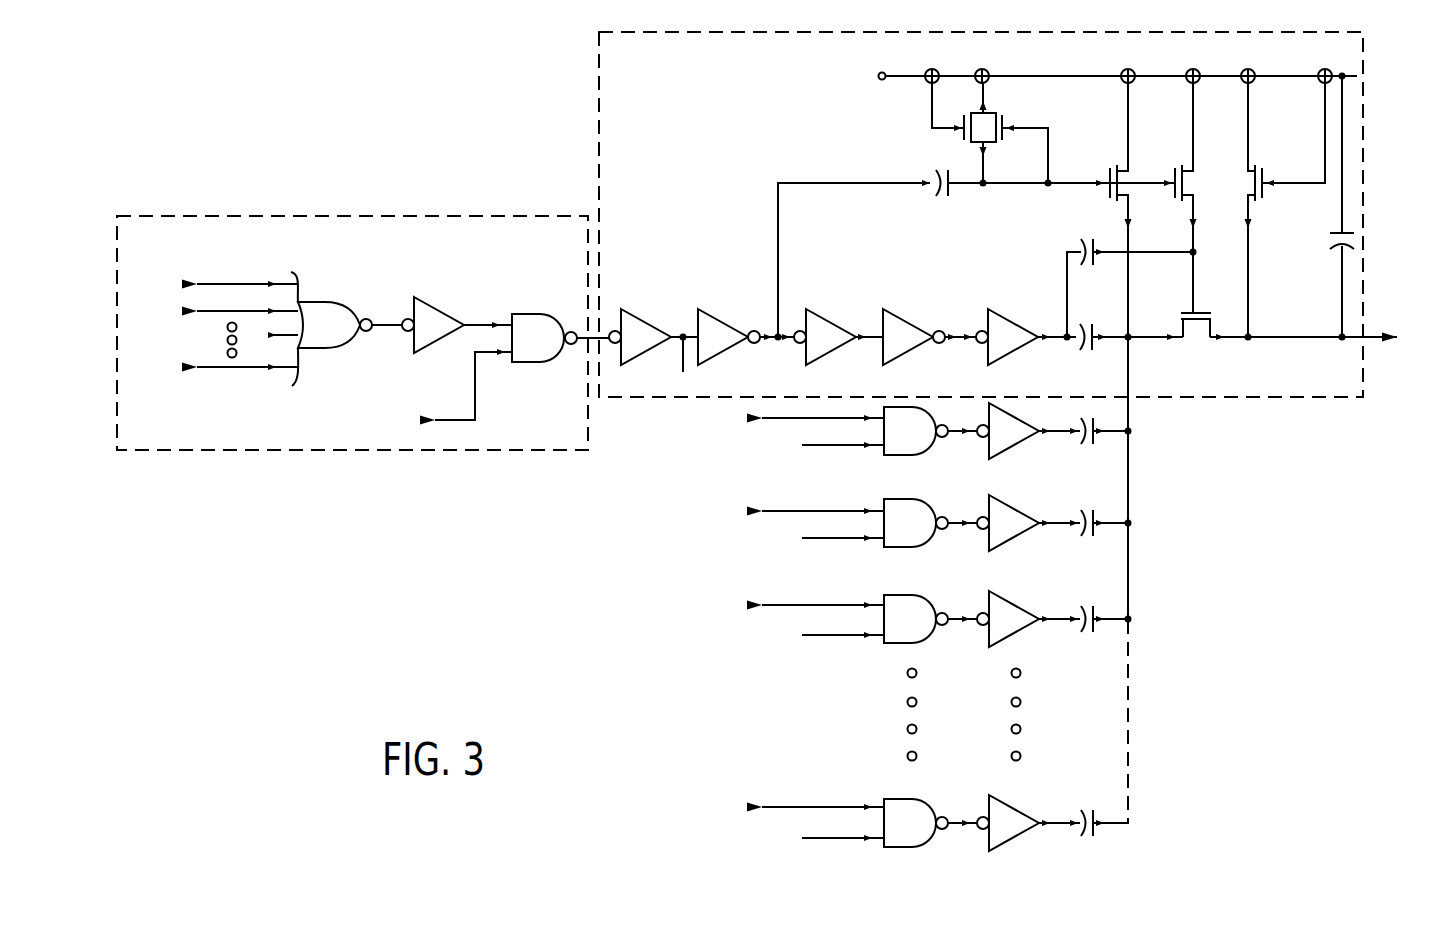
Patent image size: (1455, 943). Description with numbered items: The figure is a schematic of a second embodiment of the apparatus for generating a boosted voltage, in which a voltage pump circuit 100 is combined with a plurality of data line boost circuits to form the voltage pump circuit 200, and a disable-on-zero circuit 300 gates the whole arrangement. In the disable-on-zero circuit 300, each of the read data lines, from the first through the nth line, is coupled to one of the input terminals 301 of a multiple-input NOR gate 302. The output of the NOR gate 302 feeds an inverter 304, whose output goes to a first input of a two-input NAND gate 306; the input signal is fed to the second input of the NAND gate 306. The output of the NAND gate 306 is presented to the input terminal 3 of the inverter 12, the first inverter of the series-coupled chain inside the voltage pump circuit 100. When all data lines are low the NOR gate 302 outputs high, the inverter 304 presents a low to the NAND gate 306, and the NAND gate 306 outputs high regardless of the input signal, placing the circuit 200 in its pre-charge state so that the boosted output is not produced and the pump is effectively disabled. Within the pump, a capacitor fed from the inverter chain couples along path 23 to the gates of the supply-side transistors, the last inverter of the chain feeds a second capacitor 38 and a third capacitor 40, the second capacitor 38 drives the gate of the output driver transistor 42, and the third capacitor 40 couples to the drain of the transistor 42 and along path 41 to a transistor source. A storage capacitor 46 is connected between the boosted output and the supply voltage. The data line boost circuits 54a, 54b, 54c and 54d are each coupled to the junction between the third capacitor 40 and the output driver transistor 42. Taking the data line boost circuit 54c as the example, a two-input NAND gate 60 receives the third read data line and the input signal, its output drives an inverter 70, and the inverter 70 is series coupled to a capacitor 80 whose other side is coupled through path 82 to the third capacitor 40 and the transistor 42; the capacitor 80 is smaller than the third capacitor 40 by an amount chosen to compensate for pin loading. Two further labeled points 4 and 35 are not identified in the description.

The voltage pump circuit 100 is at (599, 104).
The voltage pump circuit 200 is at (538, 558).
The disable-on-zero circuit 300 is at (292, 216).
The input terminals 301 is at (228, 313).
The multiple-input NOR gate 302 is at (332, 348).
The inverter 304 is at (416, 299).
The two-input NAND gate 306 is at (531, 314).
The input terminal 3 is at (593, 339).
The inverter 12 is at (628, 310).
The node SIG2 4 is at (682, 334).
The path 23 is at (1028, 128).
The second capacitor 38 is at (1080, 250).
The node 35 is at (1193, 225).
The path 41 is at (1132, 318).
The third capacitor 40 is at (1100, 344).
The output driver transistor 42 is at (1196, 330).
The storage capacitor 46 is at (1340, 232).
The data line boost circuit 54a is at (698, 453).
The data line boost circuit 54b is at (716, 546).
The data line boost circuit 54c is at (876, 654).
The data line boost circuit 54d is at (714, 834).
The two-input NAND gate 60 is at (903, 644).
The inverter 70 is at (998, 645).
The capacitor 80 is at (1091, 634).
The path 82 is at (1131, 572).